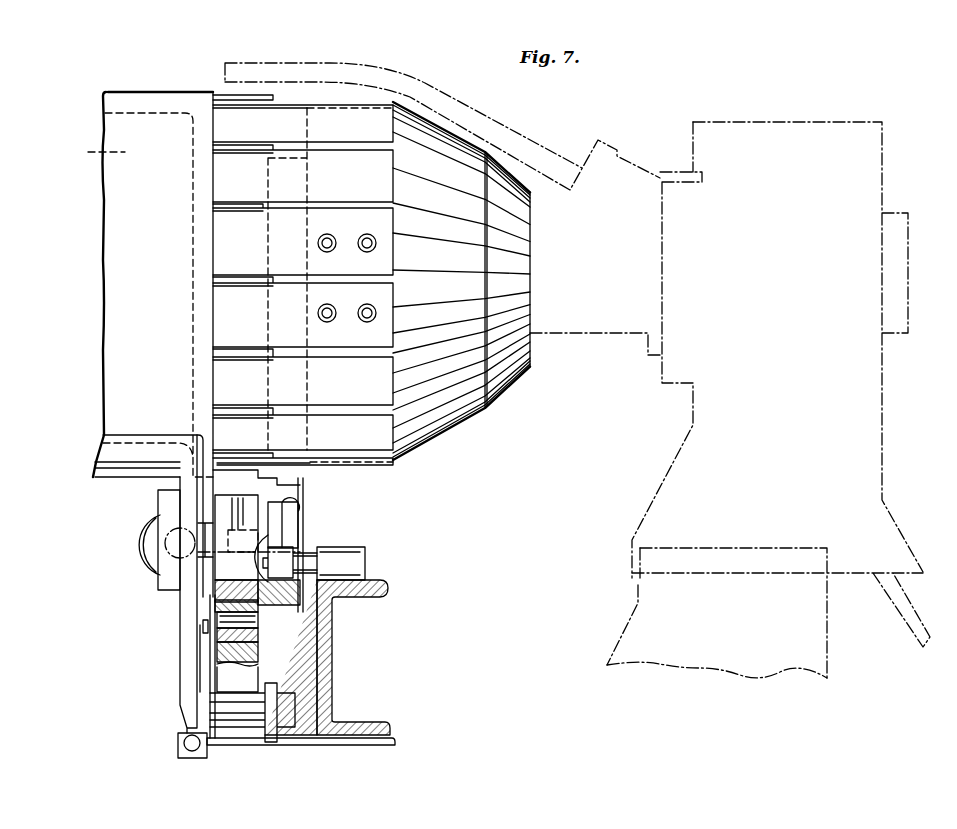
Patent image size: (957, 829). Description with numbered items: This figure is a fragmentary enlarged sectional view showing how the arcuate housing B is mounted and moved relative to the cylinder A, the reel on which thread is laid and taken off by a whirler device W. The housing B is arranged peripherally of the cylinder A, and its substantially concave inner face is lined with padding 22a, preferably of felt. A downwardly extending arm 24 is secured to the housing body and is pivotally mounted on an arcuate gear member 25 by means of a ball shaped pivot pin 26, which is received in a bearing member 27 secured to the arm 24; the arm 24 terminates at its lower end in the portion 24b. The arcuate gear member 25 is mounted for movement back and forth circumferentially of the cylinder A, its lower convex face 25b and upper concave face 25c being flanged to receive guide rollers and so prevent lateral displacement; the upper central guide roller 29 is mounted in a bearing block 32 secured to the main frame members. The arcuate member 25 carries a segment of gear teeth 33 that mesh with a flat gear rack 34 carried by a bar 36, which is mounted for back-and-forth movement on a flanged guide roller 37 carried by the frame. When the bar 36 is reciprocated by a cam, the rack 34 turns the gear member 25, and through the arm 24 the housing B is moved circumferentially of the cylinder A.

The cylinder A is at (282, 118).
The whirler device W is at (392, 75).
The arcuate housing B is at (138, 96).
The padding 22a is at (125, 152).
The downwardly extending arm 24 is at (186, 616).
The ball end 24b is at (175, 750).
The arcuate gear member 25 is at (250, 505).
The lower convex face 25b is at (300, 515).
The upper concave face 25c is at (277, 475).
The ball shaped pivot pin 26 is at (165, 536).
The bearing member 27 is at (165, 502).
The upper central guide roller 29 is at (282, 545).
The bearing block 32 is at (365, 554).
The segment of gear teeth 33 is at (258, 617).
The flat gear rack 34 is at (258, 638).
The bar 36 is at (242, 675).
The flanged guide roller 37 is at (240, 728).